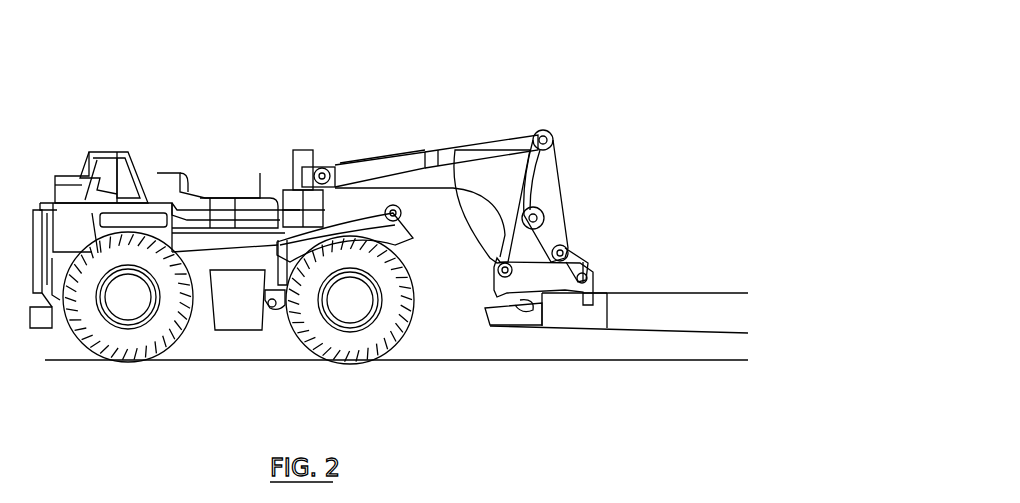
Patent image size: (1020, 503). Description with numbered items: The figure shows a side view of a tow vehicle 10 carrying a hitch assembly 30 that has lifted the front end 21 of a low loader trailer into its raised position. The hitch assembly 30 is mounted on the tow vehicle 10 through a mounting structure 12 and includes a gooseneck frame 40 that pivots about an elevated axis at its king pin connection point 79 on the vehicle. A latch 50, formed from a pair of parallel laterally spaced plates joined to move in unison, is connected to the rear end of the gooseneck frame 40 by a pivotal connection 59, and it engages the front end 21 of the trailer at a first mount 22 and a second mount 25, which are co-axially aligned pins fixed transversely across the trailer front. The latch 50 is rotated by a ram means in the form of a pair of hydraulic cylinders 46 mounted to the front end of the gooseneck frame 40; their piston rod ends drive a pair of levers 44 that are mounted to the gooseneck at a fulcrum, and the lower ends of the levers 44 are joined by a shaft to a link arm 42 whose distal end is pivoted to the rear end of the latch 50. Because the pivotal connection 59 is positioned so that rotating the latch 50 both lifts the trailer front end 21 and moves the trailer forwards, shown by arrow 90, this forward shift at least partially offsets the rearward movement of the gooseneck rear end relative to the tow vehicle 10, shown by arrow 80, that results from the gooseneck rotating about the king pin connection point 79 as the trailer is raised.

The tow vehicle 10 is at (135, 183).
The mounting structure 12 is at (289, 195).
The front end of the trailer 21 is at (647, 340).
The first mount 22 is at (525, 305).
The second mount 25 is at (584, 303).
The hitch assembly 30 is at (480, 146).
The gooseneck frame 40 is at (490, 172).
The link arm 42 is at (588, 265).
The levers 44 is at (552, 178).
The hydraulic cylinders 46 is at (357, 172).
The latch 50 is at (527, 351).
The pivotal connection 59 is at (455, 160).
The king pin connection point 79 is at (283, 262).
The arrow 80 is at (503, 277).
The arrow 90 is at (583, 258).